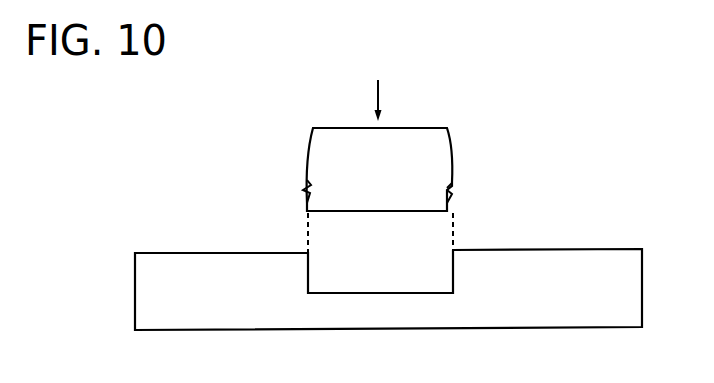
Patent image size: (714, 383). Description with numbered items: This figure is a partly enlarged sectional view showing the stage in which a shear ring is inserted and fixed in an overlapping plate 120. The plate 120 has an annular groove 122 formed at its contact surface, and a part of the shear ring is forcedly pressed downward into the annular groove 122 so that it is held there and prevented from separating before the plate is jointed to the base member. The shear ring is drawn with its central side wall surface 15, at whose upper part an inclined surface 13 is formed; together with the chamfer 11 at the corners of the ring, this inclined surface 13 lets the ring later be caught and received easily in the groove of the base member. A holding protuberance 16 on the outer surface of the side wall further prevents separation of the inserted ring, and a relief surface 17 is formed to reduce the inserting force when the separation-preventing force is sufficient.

The inclined surface 13 is at (449, 133).
The central side wall surface 15 is at (308, 176).
The relief surface 17 is at (452, 184).
The holding protuberance 16 is at (455, 192).
The chamfer 11 is at (318, 208).
The annular groove 122 is at (455, 260).
The overlapping plate 120 is at (515, 292).